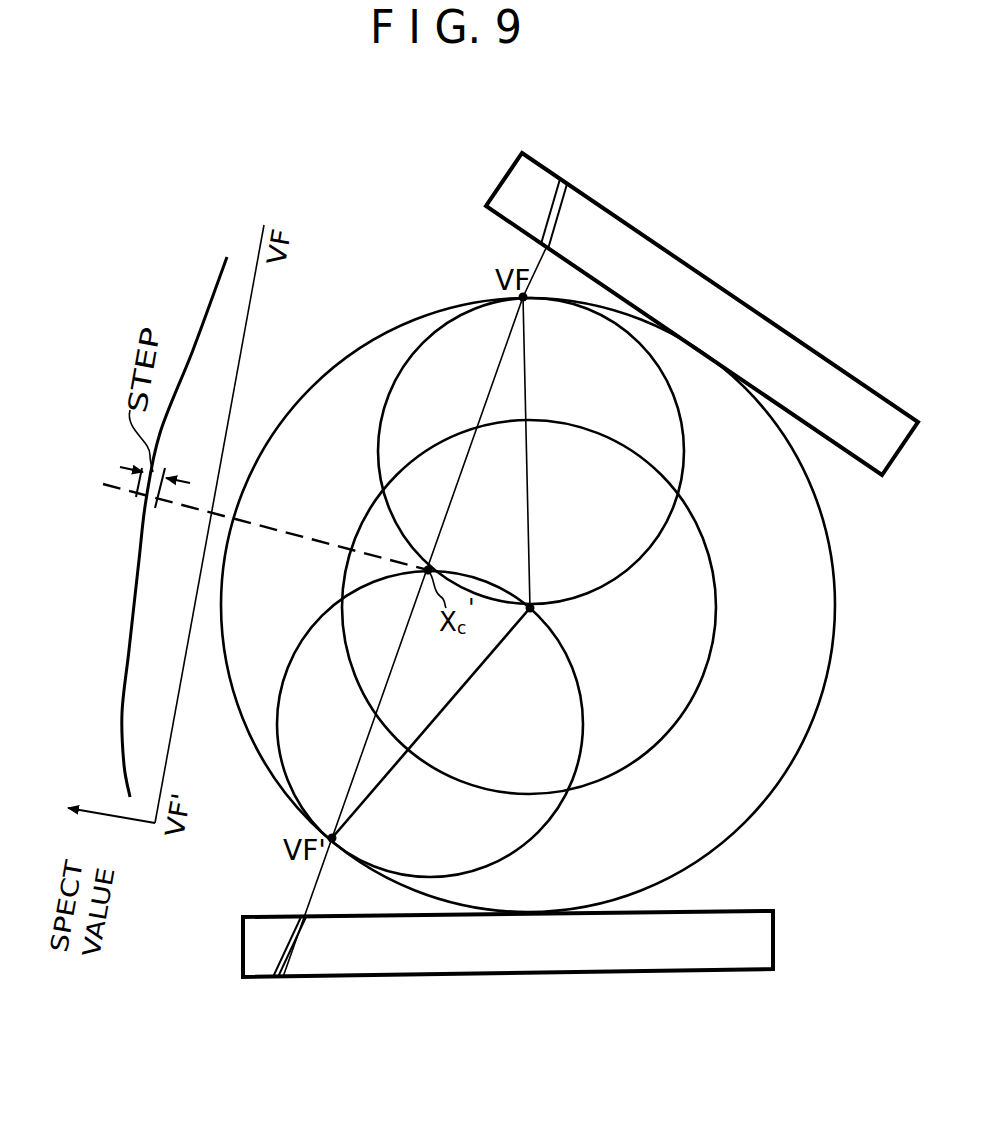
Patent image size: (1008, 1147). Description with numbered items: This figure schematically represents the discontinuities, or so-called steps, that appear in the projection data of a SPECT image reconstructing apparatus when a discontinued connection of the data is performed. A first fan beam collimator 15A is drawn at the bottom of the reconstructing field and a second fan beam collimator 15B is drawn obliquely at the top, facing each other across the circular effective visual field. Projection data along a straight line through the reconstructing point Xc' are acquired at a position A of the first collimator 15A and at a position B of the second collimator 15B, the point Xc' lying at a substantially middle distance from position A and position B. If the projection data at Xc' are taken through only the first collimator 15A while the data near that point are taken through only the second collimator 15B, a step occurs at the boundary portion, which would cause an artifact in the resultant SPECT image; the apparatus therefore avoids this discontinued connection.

The first fan beam collimator 15A is at (508, 944).
The second fan beam collimator 15B is at (702, 314).
The position of the first fan beam collimator A is at (307, 912).
The position of the second fan beam collimator B is at (547, 250).